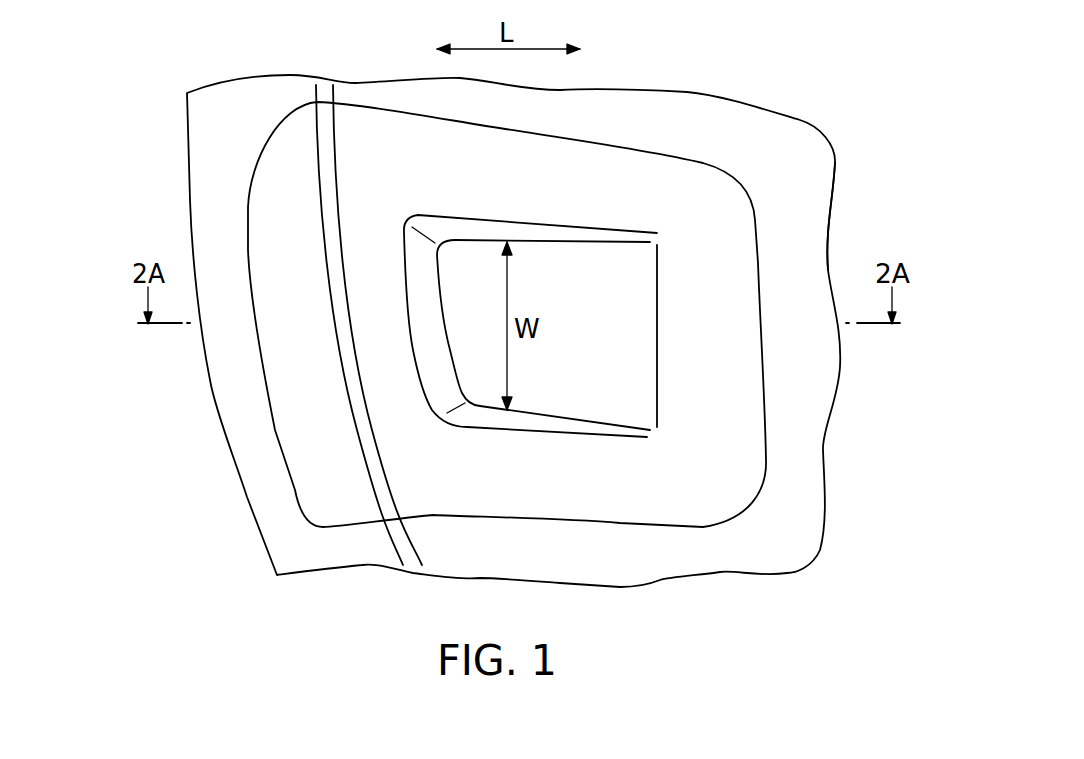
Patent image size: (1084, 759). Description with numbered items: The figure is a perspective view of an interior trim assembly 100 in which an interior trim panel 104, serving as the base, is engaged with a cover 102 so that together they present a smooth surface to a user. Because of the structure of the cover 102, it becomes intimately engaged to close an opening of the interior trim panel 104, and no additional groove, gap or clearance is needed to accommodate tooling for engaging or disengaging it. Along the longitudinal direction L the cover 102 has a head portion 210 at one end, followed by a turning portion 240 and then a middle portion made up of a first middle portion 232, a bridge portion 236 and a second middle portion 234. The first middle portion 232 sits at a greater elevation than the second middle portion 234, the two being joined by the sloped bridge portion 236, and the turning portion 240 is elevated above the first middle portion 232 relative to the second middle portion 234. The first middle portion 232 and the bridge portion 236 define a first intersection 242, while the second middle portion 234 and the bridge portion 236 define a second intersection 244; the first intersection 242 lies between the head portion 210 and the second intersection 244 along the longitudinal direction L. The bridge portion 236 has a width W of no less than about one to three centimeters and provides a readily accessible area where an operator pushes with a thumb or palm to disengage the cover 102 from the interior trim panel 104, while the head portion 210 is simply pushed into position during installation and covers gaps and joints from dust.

The interior trim assembly 100 is at (213, 523).
The cover 102 is at (466, 181).
The interior trim panel 104 is at (806, 164).
The head portion 210 is at (310, 408).
The first middle portion 232 is at (377, 308).
The second middle portion 234 is at (562, 283).
The bridge portion 236 is at (428, 340).
The turning portion 240 is at (323, 233).
The first intersection 242 is at (403, 292).
The second intersection 244 is at (443, 312).